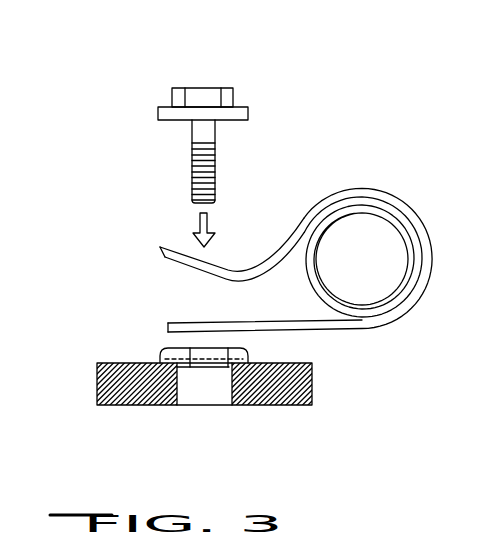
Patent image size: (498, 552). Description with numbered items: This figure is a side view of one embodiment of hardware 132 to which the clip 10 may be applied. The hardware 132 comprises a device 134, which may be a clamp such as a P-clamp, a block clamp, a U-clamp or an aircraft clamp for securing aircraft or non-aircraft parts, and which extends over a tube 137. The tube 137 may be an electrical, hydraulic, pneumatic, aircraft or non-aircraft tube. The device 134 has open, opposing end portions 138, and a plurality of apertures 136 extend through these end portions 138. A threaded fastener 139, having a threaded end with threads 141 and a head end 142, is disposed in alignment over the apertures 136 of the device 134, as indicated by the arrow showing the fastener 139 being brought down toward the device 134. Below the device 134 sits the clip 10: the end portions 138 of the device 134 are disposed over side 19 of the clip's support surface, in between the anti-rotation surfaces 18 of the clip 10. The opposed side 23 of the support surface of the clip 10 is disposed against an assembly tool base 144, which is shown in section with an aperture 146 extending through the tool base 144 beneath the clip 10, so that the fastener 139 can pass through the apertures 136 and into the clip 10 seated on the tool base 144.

The clip 10 is at (189, 392).
The anti-rotation surfaces 18 is at (193, 368).
The side of the support surface 19 is at (245, 352).
The opposed side of the support surface 23 is at (242, 353).
The hardware 132 is at (267, 209).
The device 134 is at (279, 240).
The apertures 136 is at (195, 322).
The tube 137 is at (362, 250).
The end portions 138 is at (173, 249).
The threaded fastener 139 is at (192, 133).
The threads 141 is at (215, 160).
The head end 142 is at (201, 92).
The assembly tool base 144 is at (287, 384).
The aperture 146 is at (220, 385).